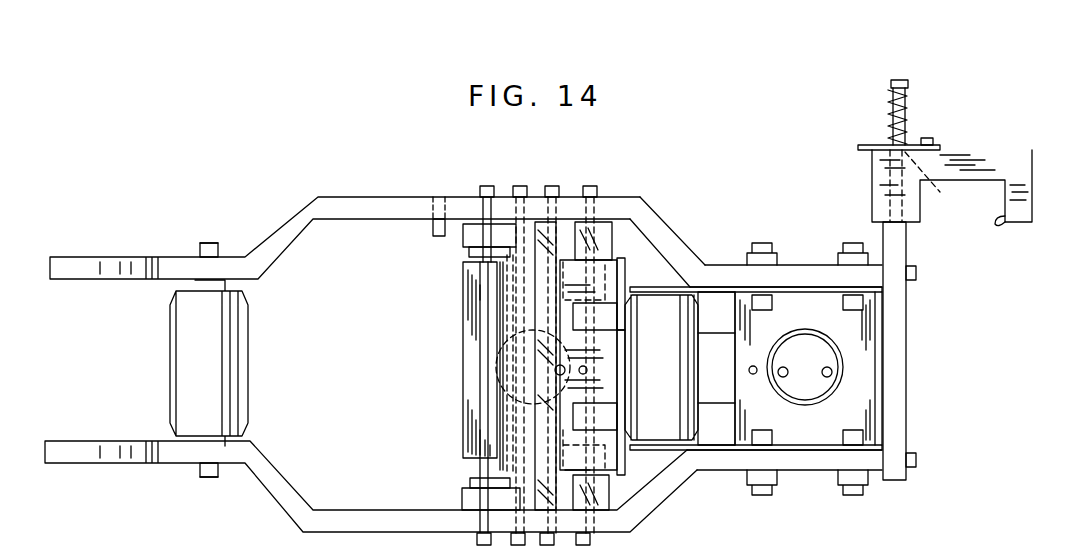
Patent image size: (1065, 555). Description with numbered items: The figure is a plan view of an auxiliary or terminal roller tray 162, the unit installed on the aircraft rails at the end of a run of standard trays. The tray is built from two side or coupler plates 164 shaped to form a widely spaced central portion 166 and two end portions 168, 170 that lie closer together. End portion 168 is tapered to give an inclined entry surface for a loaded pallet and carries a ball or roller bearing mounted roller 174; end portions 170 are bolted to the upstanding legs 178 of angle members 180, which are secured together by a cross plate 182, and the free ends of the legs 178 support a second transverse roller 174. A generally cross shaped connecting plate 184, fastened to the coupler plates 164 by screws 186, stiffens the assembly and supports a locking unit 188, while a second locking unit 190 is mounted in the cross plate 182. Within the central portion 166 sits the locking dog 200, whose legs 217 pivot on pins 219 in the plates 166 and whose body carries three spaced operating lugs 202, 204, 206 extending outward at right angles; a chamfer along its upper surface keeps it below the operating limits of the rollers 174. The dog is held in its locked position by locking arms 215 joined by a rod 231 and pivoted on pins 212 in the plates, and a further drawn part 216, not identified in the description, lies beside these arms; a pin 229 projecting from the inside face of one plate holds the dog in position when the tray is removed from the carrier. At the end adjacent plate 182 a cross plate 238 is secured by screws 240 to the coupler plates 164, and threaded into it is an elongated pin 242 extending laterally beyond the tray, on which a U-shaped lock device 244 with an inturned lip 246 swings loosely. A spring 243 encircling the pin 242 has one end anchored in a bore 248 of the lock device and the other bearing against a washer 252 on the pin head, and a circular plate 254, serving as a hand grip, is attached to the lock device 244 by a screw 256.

The terminal roller tray 162 is at (447, 170).
The coupler plates 164 is at (306, 196).
The central portion 166 is at (577, 190).
The end portion 168 is at (182, 256).
The end portion 170 is at (820, 265).
The roller 174 is at (246, 372).
The upstanding legs 178 is at (786, 291).
The angle members 180 is at (740, 340).
The cross plate 182 is at (884, 425).
The connecting plate 184 is at (470, 404).
The screws 186 is at (575, 165).
The locking unit 188 is at (500, 388).
The second locking unit 190 is at (790, 397).
The dog 200 is at (378, 498).
The operating lug 202 is at (600, 473).
The operating lug 204 is at (614, 384).
The operating lug 206 is at (622, 282).
The pins 212 is at (486, 186).
The locking arms 215 is at (470, 253).
The clamp block 216 is at (464, 240).
The legs 217 is at (609, 237).
The pins 219 is at (597, 190).
The pin 229 is at (434, 232).
The rod 231 is at (500, 300).
The cross plate 238 is at (906, 378).
The screws 240 is at (917, 272).
The pin 242 is at (907, 120).
The spring 243 is at (907, 102).
The lock device 244 is at (986, 150).
The inturned lip 246 is at (999, 225).
The bore 248 is at (939, 177).
The washer 252 is at (906, 85).
The circular plate 254 is at (872, 146).
The screw 256 is at (932, 142).